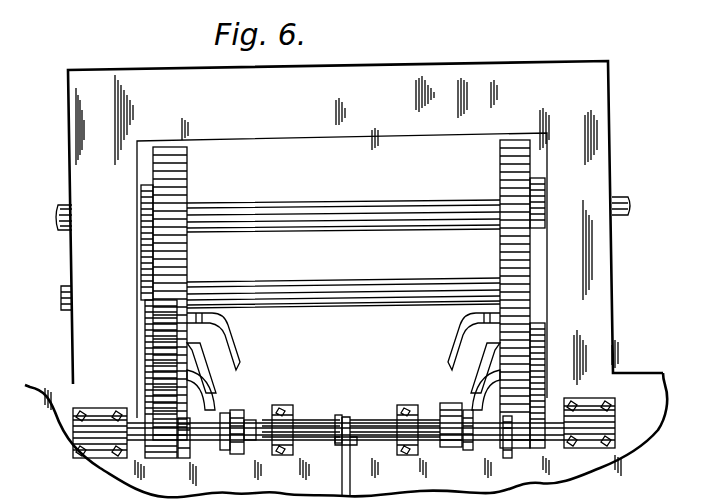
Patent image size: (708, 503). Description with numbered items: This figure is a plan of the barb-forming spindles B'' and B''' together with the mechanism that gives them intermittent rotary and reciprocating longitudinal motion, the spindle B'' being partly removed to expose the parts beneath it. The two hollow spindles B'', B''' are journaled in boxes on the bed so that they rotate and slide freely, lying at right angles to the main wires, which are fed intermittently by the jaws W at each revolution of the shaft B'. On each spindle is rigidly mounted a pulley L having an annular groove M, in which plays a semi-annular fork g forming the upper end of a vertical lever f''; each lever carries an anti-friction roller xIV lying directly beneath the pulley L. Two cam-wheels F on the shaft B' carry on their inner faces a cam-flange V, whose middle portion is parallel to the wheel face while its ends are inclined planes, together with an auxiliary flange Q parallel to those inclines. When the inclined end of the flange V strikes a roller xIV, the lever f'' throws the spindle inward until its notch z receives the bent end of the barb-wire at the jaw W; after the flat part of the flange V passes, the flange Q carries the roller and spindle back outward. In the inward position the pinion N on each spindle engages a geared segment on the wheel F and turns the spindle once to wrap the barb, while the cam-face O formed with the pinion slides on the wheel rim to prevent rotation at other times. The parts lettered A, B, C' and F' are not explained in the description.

The frame A is at (346, 279).
The upper roller shaft B is at (343, 205).
The shaft B' is at (343, 281).
The barb-forming spindle B'' is at (301, 416).
The barb-forming spindle B''' is at (395, 413).
The pinion C' is at (339, 228).
The cam-wheel F is at (163, 278).
The feed direction arrow F' is at (514, 270).
The auxiliary flange Q is at (236, 345).
The cam-flange V is at (213, 372).
The semi-annular fork g is at (226, 413).
The anti-friction roller xIV is at (243, 423).
The lever f'' is at (250, 434).
The notch z is at (336, 422).
The feeding-jaw W is at (350, 455).
The pulley L is at (449, 403).
The annular groove M is at (468, 448).
The pinion N is at (163, 458).
The cam-face O is at (184, 458).